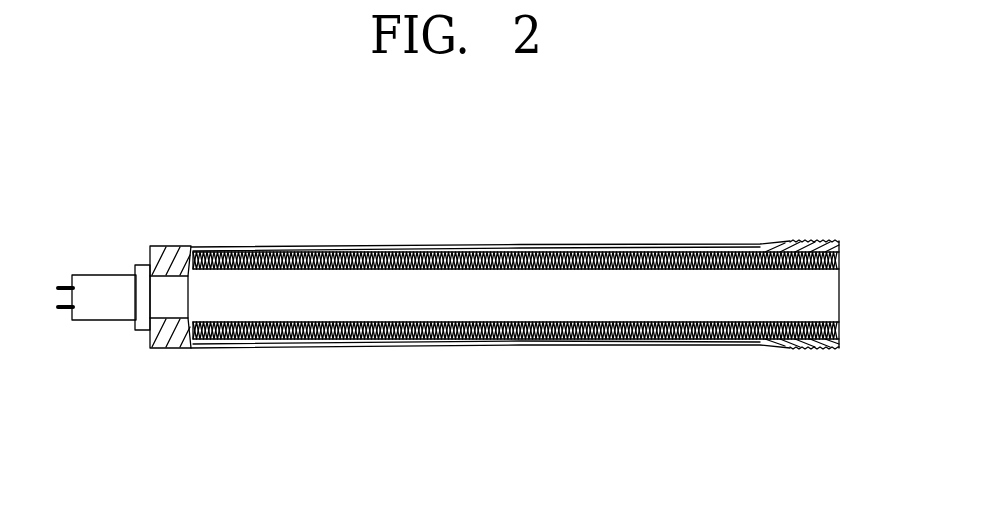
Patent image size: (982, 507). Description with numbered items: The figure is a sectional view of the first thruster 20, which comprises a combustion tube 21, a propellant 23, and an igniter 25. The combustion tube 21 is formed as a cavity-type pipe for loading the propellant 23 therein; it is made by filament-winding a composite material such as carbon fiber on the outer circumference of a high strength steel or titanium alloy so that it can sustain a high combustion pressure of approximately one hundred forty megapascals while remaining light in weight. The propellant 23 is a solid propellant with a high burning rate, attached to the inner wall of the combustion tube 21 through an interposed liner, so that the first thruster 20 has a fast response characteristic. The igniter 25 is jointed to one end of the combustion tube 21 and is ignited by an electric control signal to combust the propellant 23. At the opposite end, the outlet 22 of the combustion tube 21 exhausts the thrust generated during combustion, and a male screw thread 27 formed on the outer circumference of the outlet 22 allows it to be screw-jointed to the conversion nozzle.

The first thruster 20 is at (68, 215).
The combustion tube 21 is at (205, 250).
The outlet 22 is at (840, 343).
The propellant 23 is at (280, 248).
The igniter 25 is at (108, 307).
The male screw thread 27 is at (818, 242).